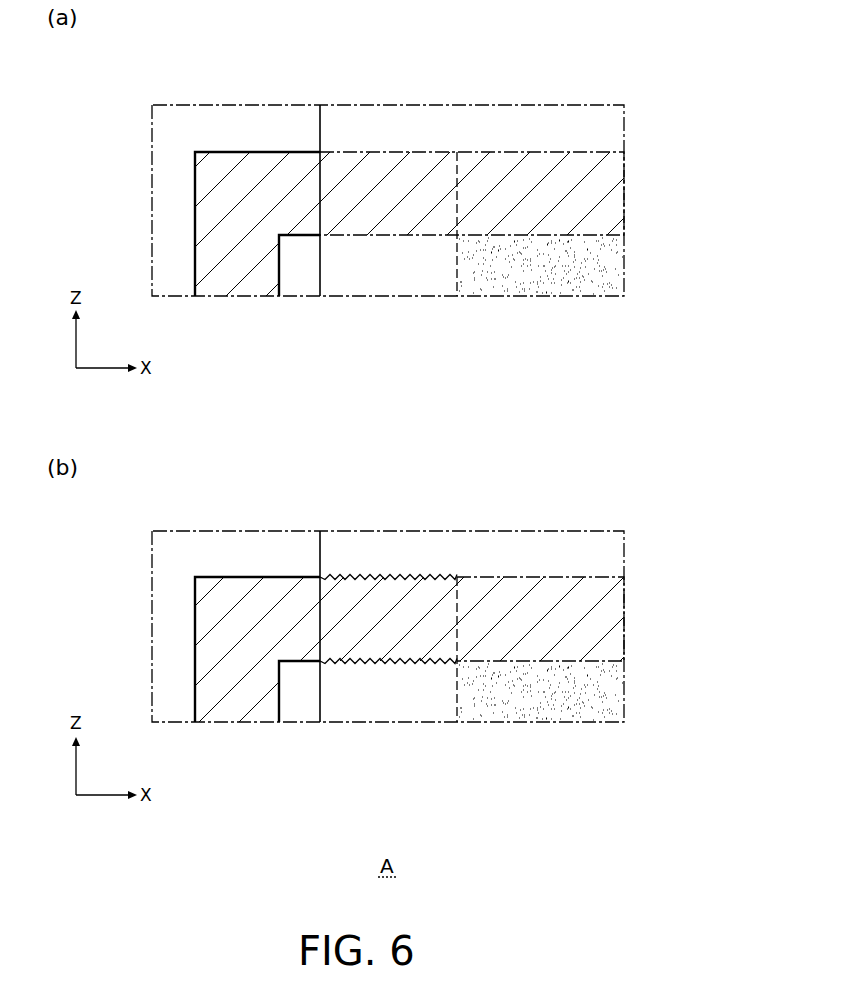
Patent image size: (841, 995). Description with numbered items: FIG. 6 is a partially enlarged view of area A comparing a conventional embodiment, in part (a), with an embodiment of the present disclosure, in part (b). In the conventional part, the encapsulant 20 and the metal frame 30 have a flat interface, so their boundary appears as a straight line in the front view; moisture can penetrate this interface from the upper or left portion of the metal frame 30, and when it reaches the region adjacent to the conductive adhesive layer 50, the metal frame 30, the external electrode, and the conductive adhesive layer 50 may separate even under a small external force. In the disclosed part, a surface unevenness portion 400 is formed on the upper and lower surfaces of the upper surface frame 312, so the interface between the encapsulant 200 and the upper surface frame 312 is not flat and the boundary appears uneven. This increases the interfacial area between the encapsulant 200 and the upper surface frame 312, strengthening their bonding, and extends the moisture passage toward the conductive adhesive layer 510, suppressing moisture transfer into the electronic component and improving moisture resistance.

The encapsulant 20 is at (361, 118).
The metal frame 30 is at (585, 193).
The conductive adhesive layer 50 is at (585, 270).
The encapsulant 200 is at (361, 543).
The upper surface frame 312 is at (585, 601).
The surface unevenness portion 400 is at (382, 640).
The conductive adhesive layer 510 is at (585, 693).